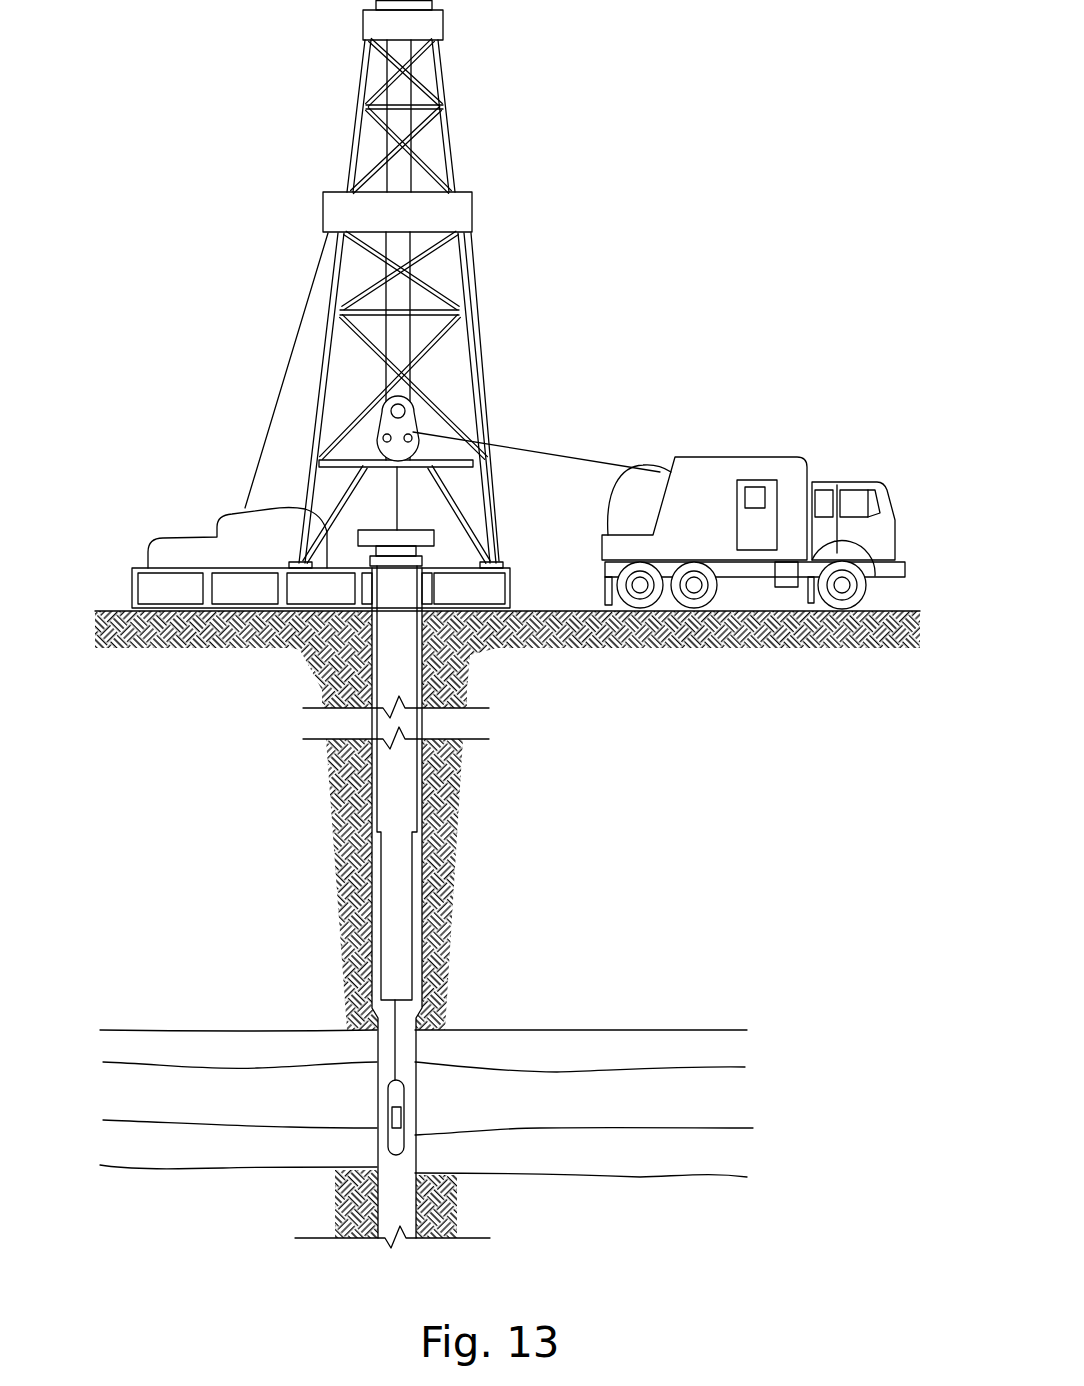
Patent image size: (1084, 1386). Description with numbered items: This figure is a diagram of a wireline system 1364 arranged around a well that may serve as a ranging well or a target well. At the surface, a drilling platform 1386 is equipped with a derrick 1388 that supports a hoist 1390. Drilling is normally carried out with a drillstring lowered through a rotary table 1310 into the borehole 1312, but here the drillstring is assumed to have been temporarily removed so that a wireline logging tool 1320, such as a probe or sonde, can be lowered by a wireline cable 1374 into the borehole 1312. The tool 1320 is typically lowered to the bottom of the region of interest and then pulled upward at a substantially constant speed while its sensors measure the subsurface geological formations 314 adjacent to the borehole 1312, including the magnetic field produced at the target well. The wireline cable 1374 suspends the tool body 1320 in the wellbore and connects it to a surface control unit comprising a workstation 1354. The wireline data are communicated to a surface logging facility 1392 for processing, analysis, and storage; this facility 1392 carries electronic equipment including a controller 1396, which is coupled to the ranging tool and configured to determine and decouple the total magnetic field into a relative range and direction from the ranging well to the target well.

The wireline system 1364 is at (690, 212).
The hoist 1390 is at (410, 407).
The wireline cable 1374 is at (530, 450).
The surface logging facility 1392 is at (697, 457).
The controller 1396 is at (757, 487).
The workstation 1354 is at (737, 528).
The rotary table 1310 is at (434, 531).
The derrick 1388 is at (494, 562).
The drilling platform 1386 is at (510, 604).
The borehole 1312 is at (377, 1097).
The wireline logging tool 1320 is at (405, 1094).
The subterranean formation 314 is at (760, 1022).